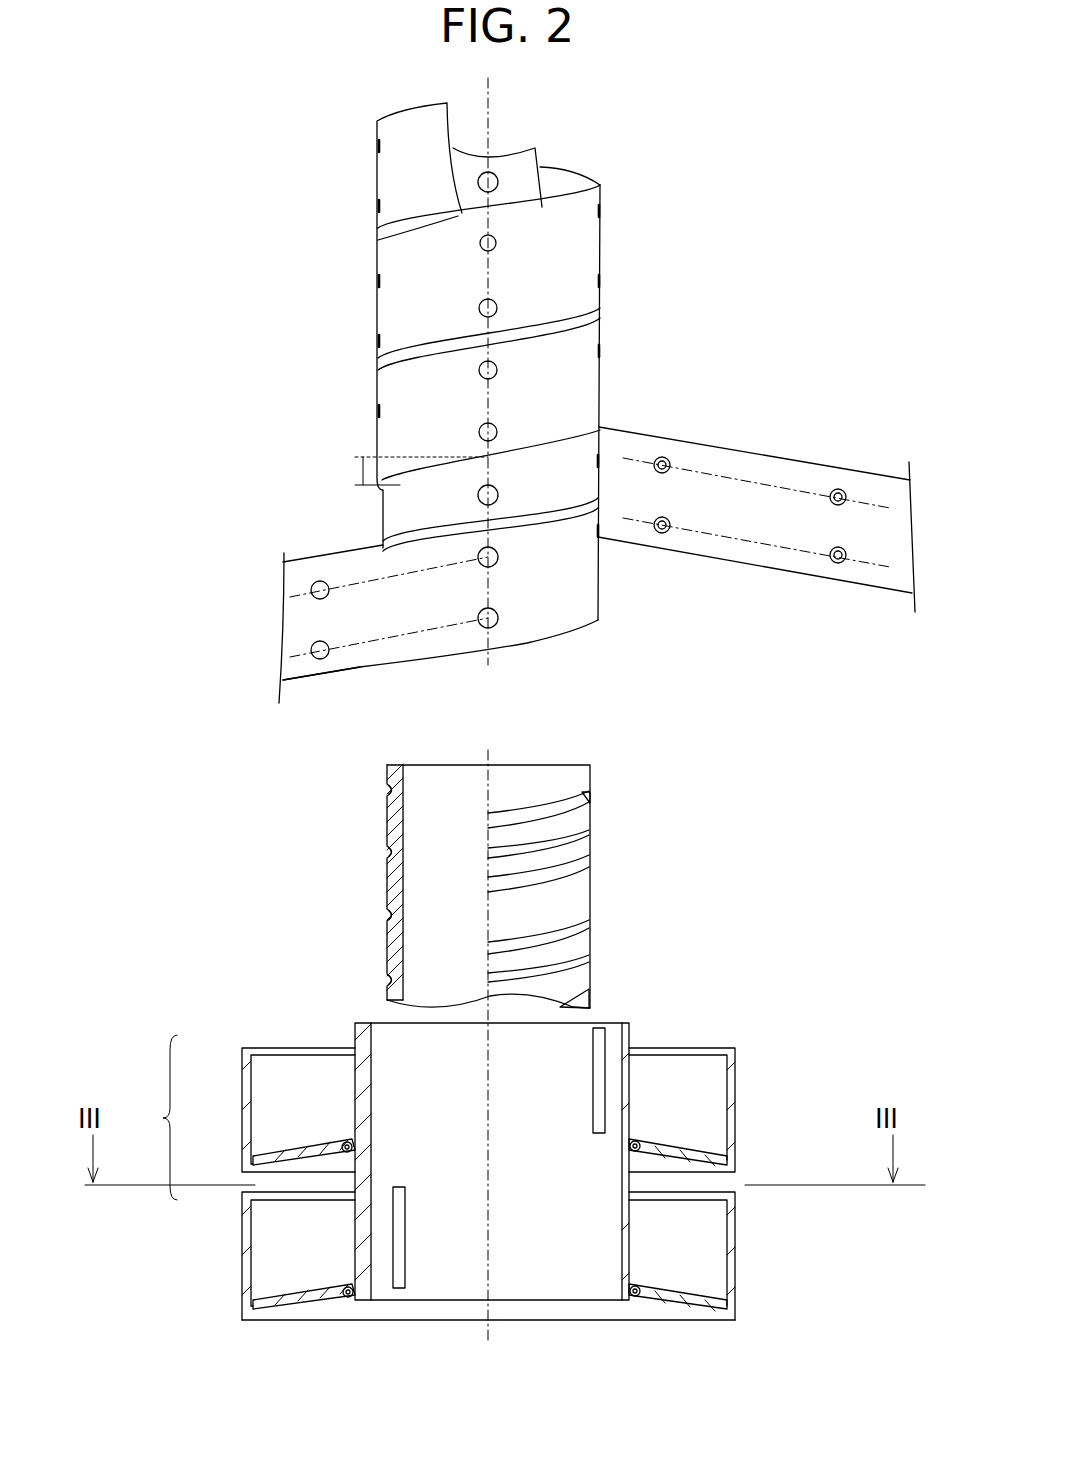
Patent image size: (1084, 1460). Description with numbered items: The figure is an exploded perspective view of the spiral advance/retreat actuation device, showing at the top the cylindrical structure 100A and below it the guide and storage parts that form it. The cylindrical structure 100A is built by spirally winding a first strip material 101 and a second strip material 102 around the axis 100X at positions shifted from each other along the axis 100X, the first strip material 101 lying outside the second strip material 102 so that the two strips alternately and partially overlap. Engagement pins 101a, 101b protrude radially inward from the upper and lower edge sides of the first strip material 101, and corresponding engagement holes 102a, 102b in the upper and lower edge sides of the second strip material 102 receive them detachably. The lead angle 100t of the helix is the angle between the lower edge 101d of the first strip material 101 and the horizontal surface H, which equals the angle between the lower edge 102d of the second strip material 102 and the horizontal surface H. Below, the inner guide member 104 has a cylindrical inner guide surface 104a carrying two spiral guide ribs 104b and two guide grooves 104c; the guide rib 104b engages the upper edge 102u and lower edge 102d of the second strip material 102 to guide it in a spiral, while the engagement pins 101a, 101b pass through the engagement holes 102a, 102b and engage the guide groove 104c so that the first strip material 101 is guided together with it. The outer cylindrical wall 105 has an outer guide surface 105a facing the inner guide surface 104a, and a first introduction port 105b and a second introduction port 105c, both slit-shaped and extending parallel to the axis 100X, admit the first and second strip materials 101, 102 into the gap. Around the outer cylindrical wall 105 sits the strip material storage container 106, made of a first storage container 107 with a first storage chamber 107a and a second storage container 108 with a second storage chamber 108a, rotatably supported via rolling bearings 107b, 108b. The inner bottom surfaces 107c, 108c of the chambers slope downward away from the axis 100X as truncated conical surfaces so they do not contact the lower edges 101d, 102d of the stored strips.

The cylindrical structure 100A is at (266, 214).
The axis 100X is at (493, 112).
The lead angle 100t is at (362, 467).
The first strip material 101 is at (743, 468).
The engagement pin 101a is at (660, 456).
The engagement pin 101b is at (662, 534).
The lower edge 101d is at (740, 568).
The second strip material 102 is at (297, 628).
The engagement hole 102a is at (310, 593).
The engagement hole 102b is at (323, 660).
The upper edge 102u is at (347, 560).
The lower edge 102d is at (455, 660).
The horizontal surface H is at (453, 457).
The inner guide member 104 is at (386, 823).
The inner guide surface 104a is at (588, 882).
The guide rib 104b is at (586, 835).
The guide groove 104c is at (389, 790).
The outer cylindrical wall 105 is at (630, 1031).
The outer guide surface 105a is at (432, 1285).
The first introduction port 105b is at (598, 1082).
The second introduction port 105c is at (405, 1234).
The strip material storage container 106 is at (467, 1190).
The first storage container 107 is at (243, 1083).
The first storage chamber 107a is at (288, 1068).
The rolling bearing 107b is at (362, 1148).
The inner bottom surface 107c is at (680, 1150).
The second storage container 108 is at (243, 1211).
The second storage chamber 108a is at (282, 1245).
The rolling bearing 108b is at (350, 1300).
The inner bottom surface 108c is at (680, 1296).